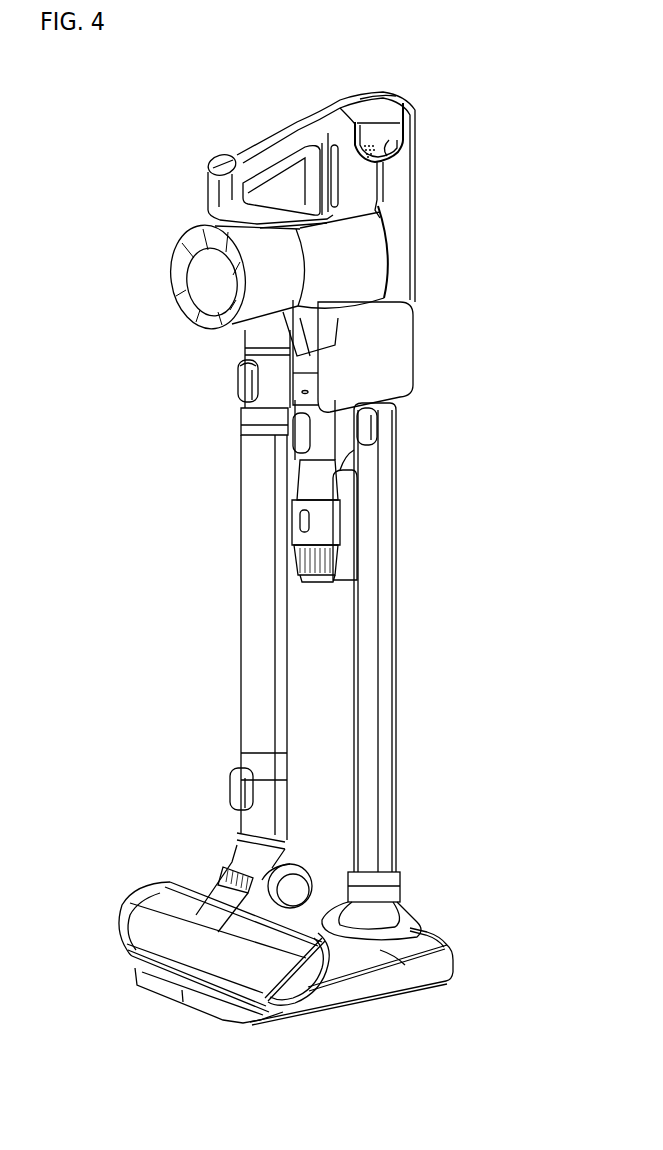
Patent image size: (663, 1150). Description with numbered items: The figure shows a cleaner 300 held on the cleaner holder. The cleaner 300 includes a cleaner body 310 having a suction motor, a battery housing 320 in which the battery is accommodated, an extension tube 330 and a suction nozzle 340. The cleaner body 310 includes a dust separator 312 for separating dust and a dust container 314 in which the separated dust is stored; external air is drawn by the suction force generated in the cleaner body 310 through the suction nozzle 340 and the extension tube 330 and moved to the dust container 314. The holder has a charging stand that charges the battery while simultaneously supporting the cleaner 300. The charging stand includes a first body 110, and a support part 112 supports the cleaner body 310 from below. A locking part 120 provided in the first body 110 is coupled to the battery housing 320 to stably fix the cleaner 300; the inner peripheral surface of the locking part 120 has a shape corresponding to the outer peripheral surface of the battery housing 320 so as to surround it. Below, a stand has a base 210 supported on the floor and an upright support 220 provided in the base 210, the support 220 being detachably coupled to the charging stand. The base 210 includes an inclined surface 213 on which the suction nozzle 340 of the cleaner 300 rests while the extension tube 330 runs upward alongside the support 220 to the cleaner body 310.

The cleaner 300 is at (160, 252).
The first body 110 is at (398, 190).
The support part 112 is at (400, 302).
The locking part 120 is at (364, 107).
The battery housing 320 is at (367, 176).
The cleaner body 310 is at (150, 347).
The dust separator 312 is at (265, 300).
The dust container 314 is at (313, 330).
The extension tube 330 is at (255, 655).
The suction nozzle 340 is at (137, 928).
The support 220 is at (382, 768).
The base 210 is at (440, 955).
The inclined surface 213 is at (357, 953).